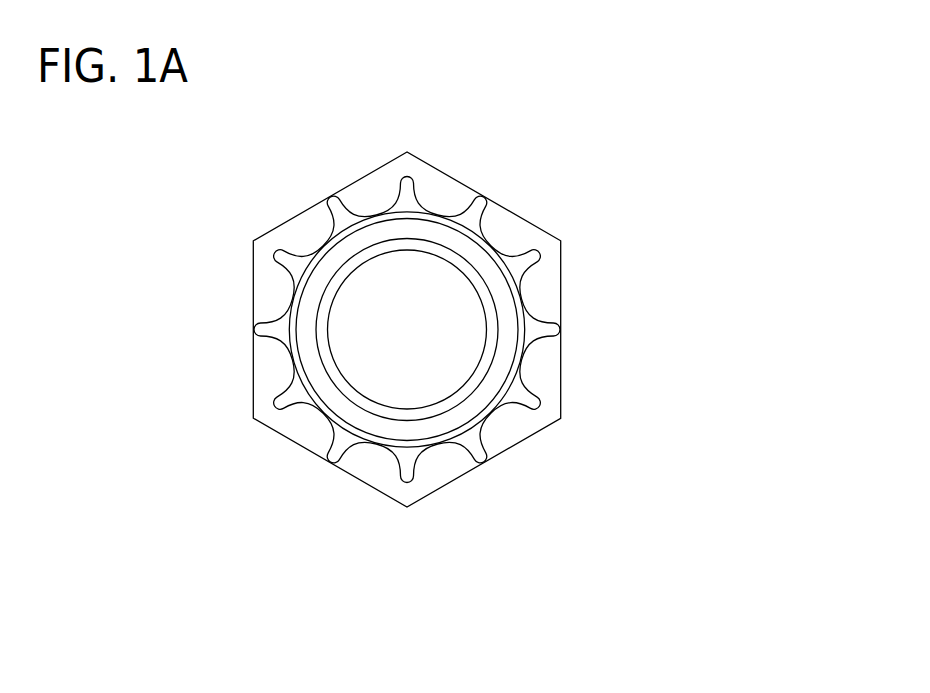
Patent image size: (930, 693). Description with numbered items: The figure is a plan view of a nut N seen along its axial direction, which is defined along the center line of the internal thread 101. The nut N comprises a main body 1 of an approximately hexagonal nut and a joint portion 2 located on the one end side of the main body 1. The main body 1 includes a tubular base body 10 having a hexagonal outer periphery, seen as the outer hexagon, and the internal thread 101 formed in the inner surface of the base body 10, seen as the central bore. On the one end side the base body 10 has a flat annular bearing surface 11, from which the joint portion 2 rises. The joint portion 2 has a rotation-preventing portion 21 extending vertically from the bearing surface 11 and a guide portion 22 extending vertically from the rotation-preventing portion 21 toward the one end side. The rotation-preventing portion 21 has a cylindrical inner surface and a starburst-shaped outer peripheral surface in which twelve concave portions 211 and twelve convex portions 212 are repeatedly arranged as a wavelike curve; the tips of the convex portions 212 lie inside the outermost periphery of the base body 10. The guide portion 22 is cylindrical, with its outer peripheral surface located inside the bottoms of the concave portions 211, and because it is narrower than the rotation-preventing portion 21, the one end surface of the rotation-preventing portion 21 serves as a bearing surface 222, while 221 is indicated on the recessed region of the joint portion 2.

The main body 1 is at (318, 329).
The base body 10 is at (290, 437).
The bearing surface 11 is at (267, 385).
The internal thread 101 is at (350, 362).
The joint portion 2 is at (469, 302).
The rotation-preventing portion 21 is at (515, 330).
The concave portions 211 is at (530, 380).
The convex portions 212 is at (535, 403).
The guide portion 22 is at (444, 302).
The recess 221 is at (320, 248).
The bearing surface 222 is at (280, 253).
The nut N is at (494, 512).